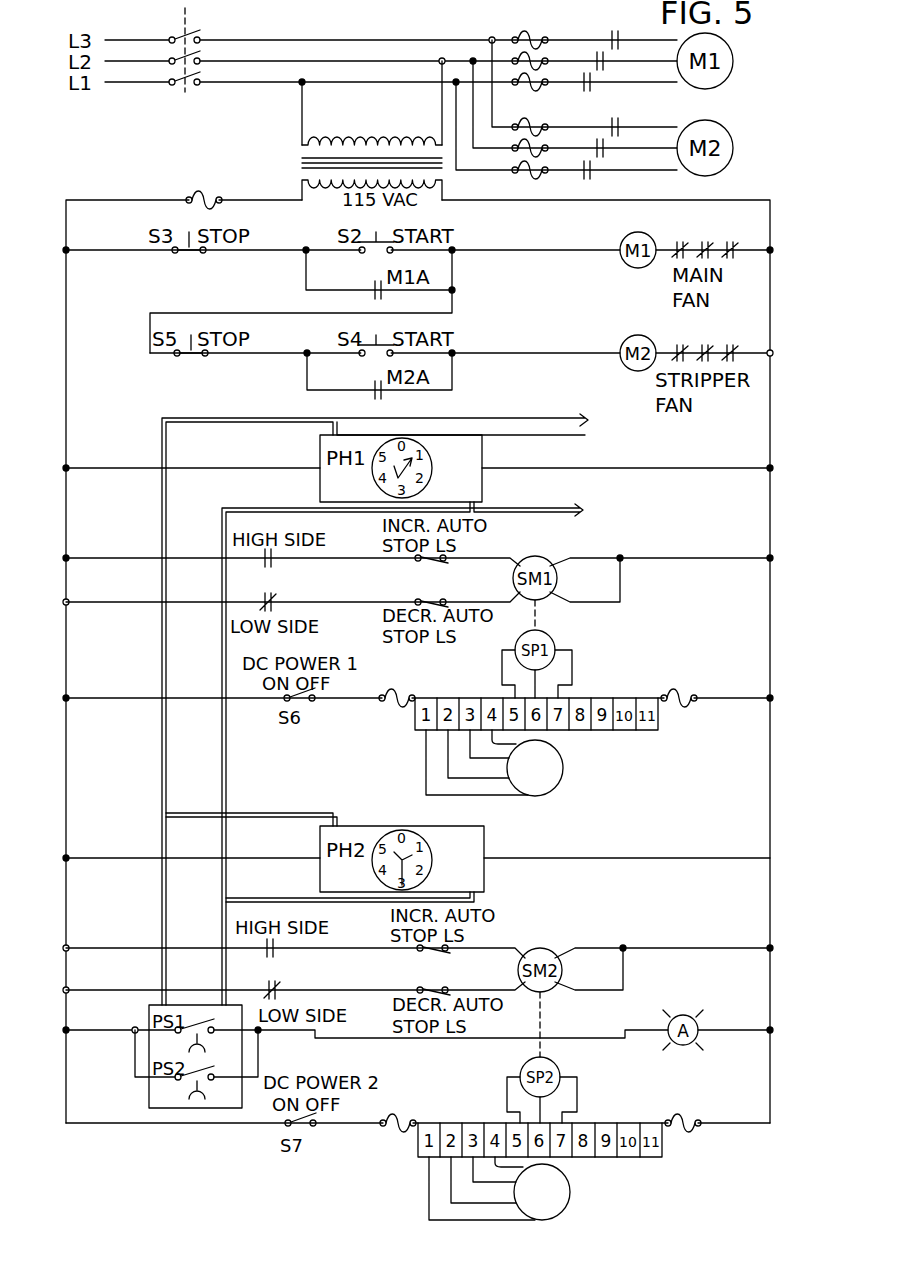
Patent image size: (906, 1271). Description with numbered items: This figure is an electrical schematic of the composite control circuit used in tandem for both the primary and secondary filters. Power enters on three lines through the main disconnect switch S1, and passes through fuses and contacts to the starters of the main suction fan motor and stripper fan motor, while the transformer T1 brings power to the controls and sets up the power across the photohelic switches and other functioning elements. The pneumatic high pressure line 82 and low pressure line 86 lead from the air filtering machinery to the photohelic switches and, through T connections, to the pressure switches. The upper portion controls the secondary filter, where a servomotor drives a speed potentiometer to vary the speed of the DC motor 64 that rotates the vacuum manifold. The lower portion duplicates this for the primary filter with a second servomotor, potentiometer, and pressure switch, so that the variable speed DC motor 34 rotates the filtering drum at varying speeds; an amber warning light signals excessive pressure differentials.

The pneumatic line 86 is at (540, 412).
The pneumatic line 82 is at (560, 506).
The DC motor 64 is at (562, 766).
The variable speed DC motor 34 is at (568, 1198).
The main disconnect switch S1 is at (209, 25).
The transformer T1 is at (285, 160).